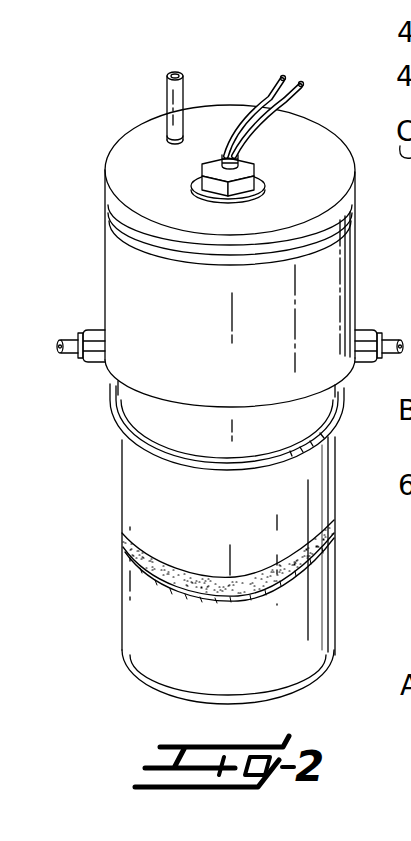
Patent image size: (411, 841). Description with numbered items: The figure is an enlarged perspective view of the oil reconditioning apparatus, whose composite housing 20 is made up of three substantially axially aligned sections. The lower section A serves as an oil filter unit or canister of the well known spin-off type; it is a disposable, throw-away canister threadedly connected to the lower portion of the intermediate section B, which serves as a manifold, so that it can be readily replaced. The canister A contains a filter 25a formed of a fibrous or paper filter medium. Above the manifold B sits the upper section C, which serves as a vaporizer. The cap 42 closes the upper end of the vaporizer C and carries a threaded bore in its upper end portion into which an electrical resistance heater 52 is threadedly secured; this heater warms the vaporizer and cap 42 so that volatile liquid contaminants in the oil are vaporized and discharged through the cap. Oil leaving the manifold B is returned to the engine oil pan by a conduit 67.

The composite housing 20 is at (221, 359).
The cap 42 is at (92, 163).
The electrical resistance heater 52 is at (212, 170).
The upper section C is at (100, 249).
The conduit 67 is at (61, 344).
The intermediate section B is at (160, 432).
The lower section A is at (196, 570).
The filter 25a is at (176, 573).